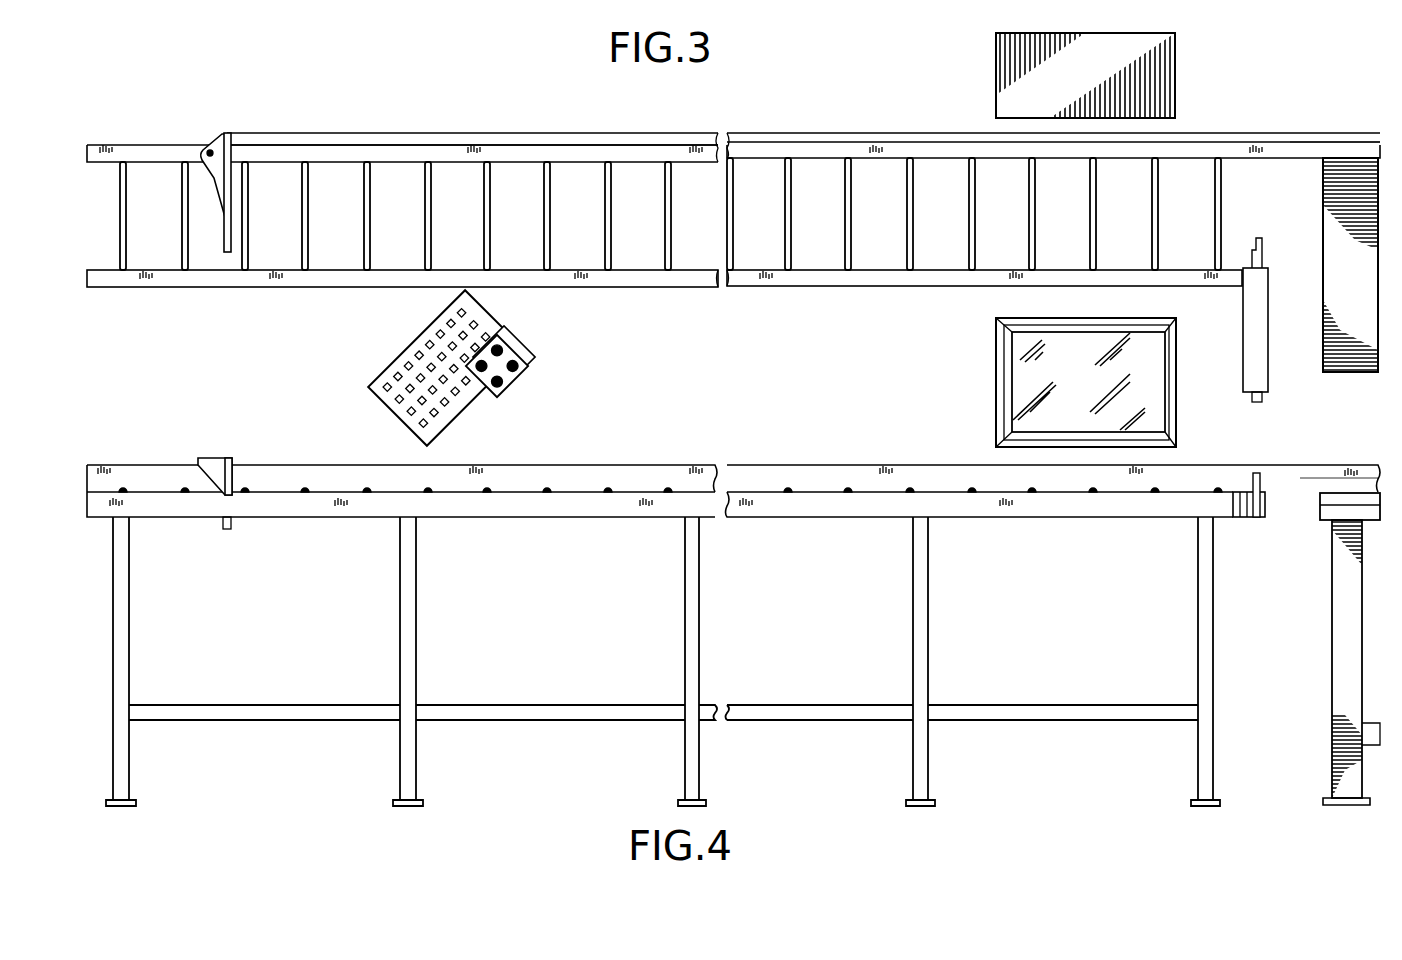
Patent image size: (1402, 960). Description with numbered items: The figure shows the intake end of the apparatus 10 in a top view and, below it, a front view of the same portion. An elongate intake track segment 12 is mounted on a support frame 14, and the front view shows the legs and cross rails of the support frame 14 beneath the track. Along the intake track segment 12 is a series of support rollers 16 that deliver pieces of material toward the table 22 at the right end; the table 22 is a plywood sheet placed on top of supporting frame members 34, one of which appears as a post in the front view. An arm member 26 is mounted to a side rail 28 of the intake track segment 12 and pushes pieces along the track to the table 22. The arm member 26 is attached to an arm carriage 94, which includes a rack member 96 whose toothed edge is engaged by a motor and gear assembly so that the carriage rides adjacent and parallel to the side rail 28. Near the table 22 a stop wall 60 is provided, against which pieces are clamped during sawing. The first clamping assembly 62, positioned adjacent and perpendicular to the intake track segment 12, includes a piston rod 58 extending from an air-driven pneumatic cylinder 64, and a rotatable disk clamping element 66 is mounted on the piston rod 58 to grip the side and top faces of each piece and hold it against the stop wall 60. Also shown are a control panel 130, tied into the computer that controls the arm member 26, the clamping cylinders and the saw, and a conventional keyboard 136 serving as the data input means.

In FIG. 3, the apparatus 10 is at (170, 120).
In FIG. 4, the apparatus 10 is at (670, 435).
In FIG. 3, the intake track segment 12 is at (630, 287).
In FIG. 4, the intake track segment 12 is at (557, 510).
In FIG. 3, the support frame 14 is at (1270, 102).
In FIG. 4, the support frame 14 is at (703, 610).
In FIG. 3, the support rollers 16 is at (1213, 214).
In FIG. 4, the support rollers 16 is at (670, 462).
In FIG. 3, the table 22 is at (1337, 306).
In FIG. 3, the arm member 26 is at (228, 216).
In FIG. 3, the side rail 28 is at (390, 164).
In FIG. 4, the side rail 28 is at (345, 465).
In FIG. 4, the supporting frame members 34 is at (1332, 607).
In FIG. 3, the piston rod 58 is at (1268, 258).
In FIG. 3, the stop wall 60 is at (1297, 158).
In FIG. 4, the stop wall 60 is at (1352, 467).
In FIG. 3, the first clamping assembly 62 is at (1243, 300).
In FIG. 4, the first clamping assembly 62 is at (1260, 508).
In FIG. 3, the pneumatic cylinder 64 is at (1268, 372).
In FIG. 4, the rotatable disk clamping element 66 is at (1262, 478).
In FIG. 3, the arm carriage 94 is at (240, 105).
In FIG. 4, the arm carriage 94 is at (230, 435).
In FIG. 3, the rack member 96 is at (432, 134).
In FIG. 3, the control panel 130 is at (470, 405).
In FIG. 3, the keyboard 136 is at (498, 322).